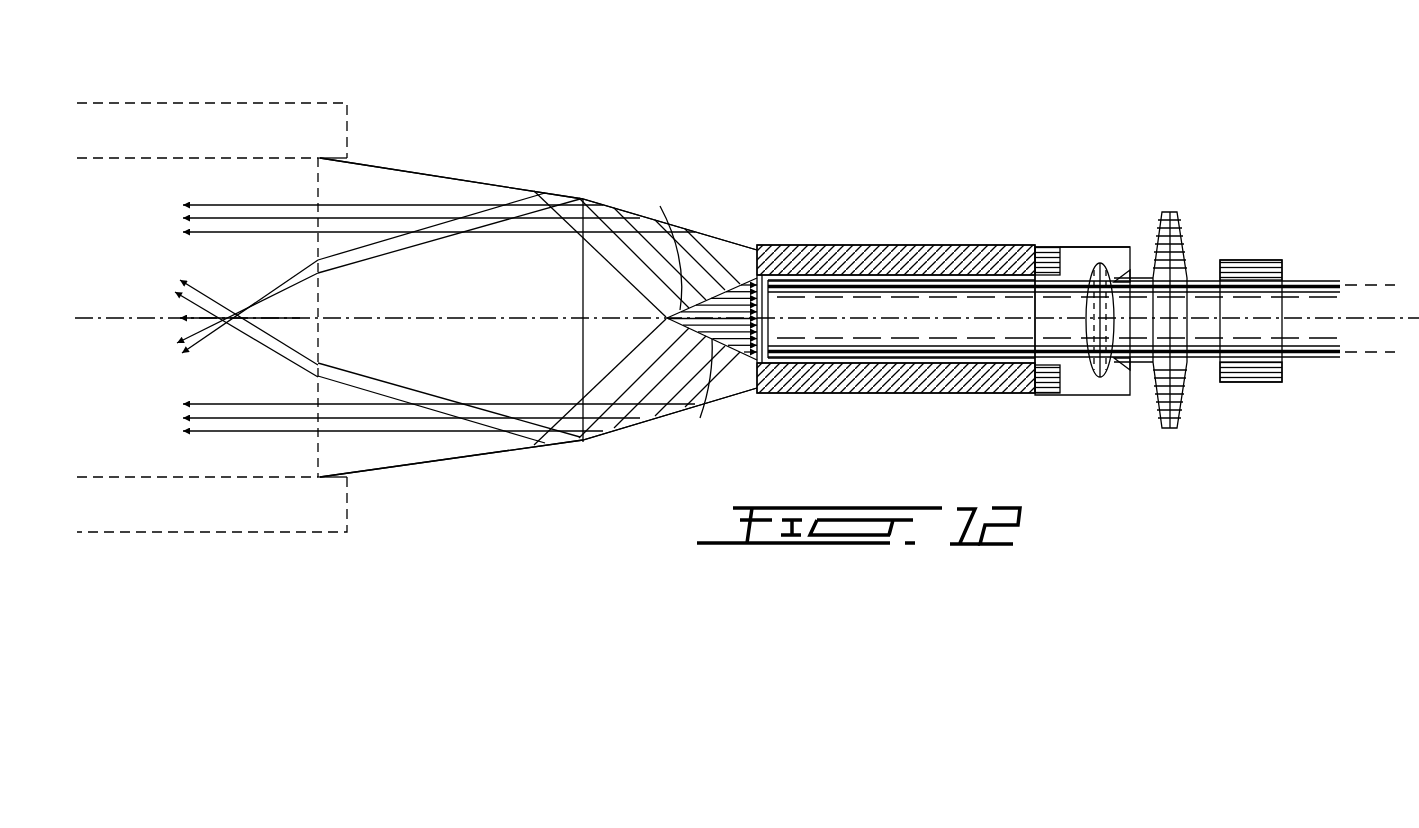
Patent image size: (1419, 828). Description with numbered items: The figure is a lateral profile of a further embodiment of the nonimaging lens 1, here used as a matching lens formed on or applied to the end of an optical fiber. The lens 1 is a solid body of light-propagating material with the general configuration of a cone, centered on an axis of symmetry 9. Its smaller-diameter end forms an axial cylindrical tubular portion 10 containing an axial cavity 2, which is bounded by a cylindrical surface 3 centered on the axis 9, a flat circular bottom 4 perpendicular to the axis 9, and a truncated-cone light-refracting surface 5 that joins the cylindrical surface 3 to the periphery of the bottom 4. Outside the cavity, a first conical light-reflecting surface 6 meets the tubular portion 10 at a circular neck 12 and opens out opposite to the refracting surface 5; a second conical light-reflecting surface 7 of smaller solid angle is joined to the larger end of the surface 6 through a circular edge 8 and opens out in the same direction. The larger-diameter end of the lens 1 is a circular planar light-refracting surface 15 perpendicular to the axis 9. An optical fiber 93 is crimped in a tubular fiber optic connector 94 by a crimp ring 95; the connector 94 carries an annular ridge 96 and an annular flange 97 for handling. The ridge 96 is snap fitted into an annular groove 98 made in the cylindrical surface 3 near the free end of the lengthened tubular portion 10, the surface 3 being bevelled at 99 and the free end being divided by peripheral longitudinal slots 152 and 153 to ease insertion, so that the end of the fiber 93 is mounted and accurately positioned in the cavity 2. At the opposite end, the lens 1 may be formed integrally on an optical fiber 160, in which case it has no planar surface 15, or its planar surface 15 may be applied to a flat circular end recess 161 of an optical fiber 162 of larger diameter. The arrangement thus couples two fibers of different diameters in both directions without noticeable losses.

The solid lens 1 is at (585, 176).
The axial cavity 2 is at (764, 276).
The cylindrical surface 3 is at (900, 358).
The flat circular bottom 4 is at (663, 228).
The light-refracting surface 5 is at (700, 418).
The first light-reflecting surface 6 is at (712, 236).
The second light-reflecting surface 7 is at (505, 182).
The circular edge 8 is at (583, 443).
The axis of symmetry 9 is at (105, 318).
The tubular portion 10 is at (942, 256).
The circular neck 12 is at (748, 390).
The light-refracting planar surface 15 is at (317, 445).
The optical fiber 93 is at (1332, 287).
The tubular fiber optic connector 94 is at (1058, 364).
The crimp ring 95 is at (1257, 268).
The annular ridge 96 is at (1112, 370).
The annular flange 97 is at (1187, 216).
The annular groove 98 is at (1088, 272).
The bevelled surface 99 is at (1137, 275).
The longitudinal slot 152 is at (1101, 251).
The longitudinal slot 153 is at (1080, 386).
The optical fiber 160 is at (133, 172).
The flat circular end recess 161 is at (320, 190).
The optical fiber of larger diameter 162 is at (288, 127).